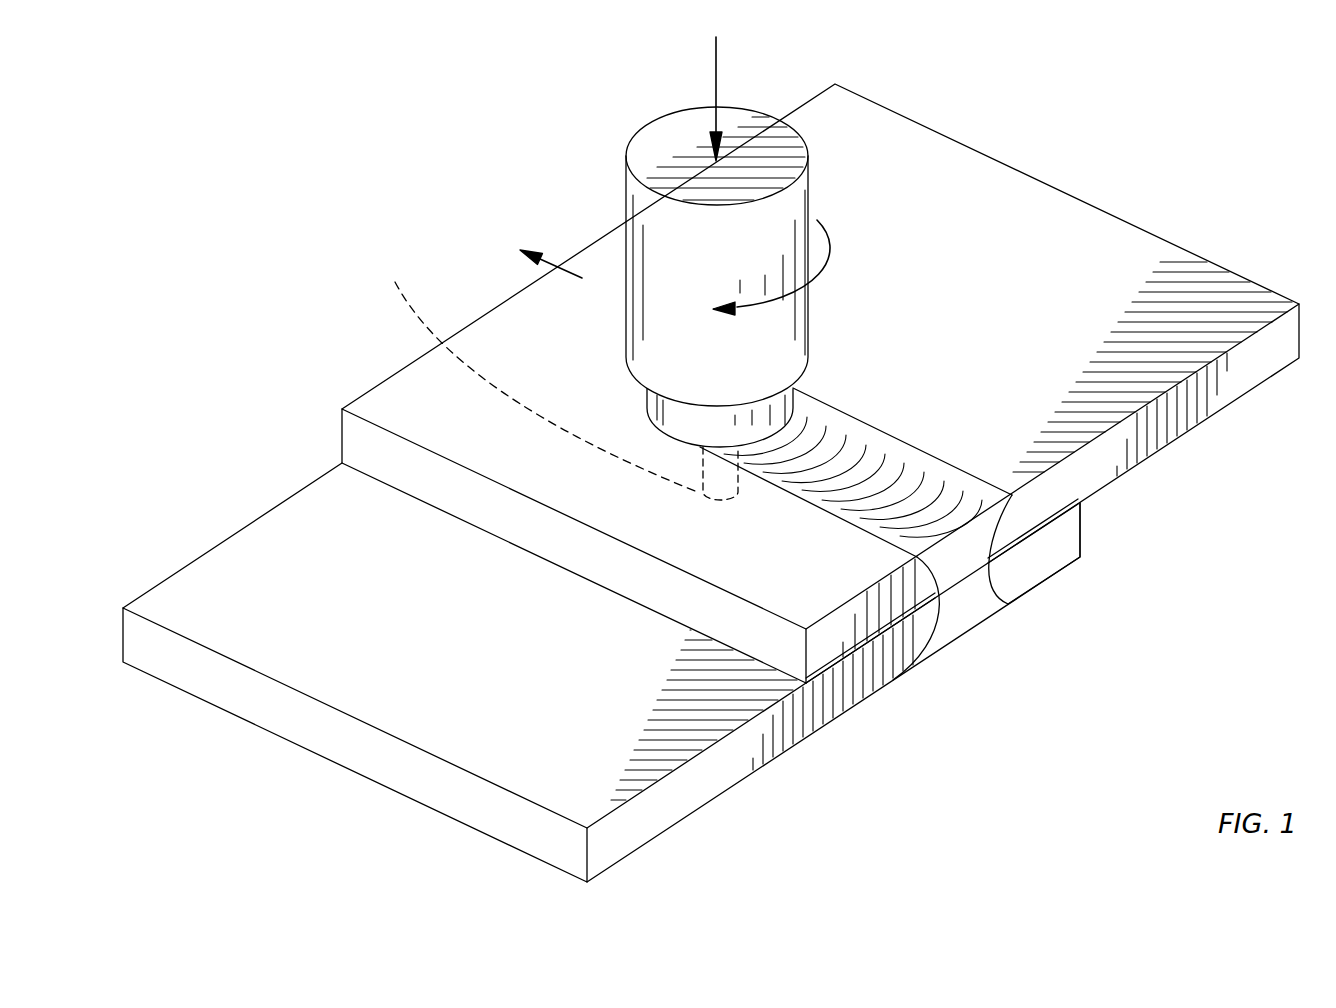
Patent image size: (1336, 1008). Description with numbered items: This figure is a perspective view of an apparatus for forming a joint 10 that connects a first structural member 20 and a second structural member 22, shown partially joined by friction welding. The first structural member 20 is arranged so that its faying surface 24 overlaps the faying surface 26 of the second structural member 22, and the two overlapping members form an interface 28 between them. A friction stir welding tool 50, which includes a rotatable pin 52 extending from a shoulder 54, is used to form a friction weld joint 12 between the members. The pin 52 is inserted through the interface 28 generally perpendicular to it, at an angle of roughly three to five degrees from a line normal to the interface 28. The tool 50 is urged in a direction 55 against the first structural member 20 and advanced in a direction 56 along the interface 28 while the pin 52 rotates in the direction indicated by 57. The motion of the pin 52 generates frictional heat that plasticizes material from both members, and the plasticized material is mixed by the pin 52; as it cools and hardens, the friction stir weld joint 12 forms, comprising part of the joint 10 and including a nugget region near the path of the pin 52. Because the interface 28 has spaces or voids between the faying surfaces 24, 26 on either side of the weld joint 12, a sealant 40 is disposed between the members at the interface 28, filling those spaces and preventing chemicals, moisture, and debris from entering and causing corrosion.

The joint 10 is at (990, 651).
The friction weld joint 12 is at (980, 583).
The first structural member 20 is at (1193, 430).
The second structural member 22 is at (658, 838).
The faying surface 24 is at (1023, 542).
The faying surface 26 is at (880, 633).
The interface 28 is at (1097, 503).
The sealant 40 is at (852, 655).
The friction stir welding tool 50 is at (637, 135).
The rotatable pin 52 is at (538, 368).
The shoulder 54 is at (835, 413).
The direction 55 is at (718, 80).
The direction 56 is at (575, 268).
The direction of rotation 57 is at (827, 237).